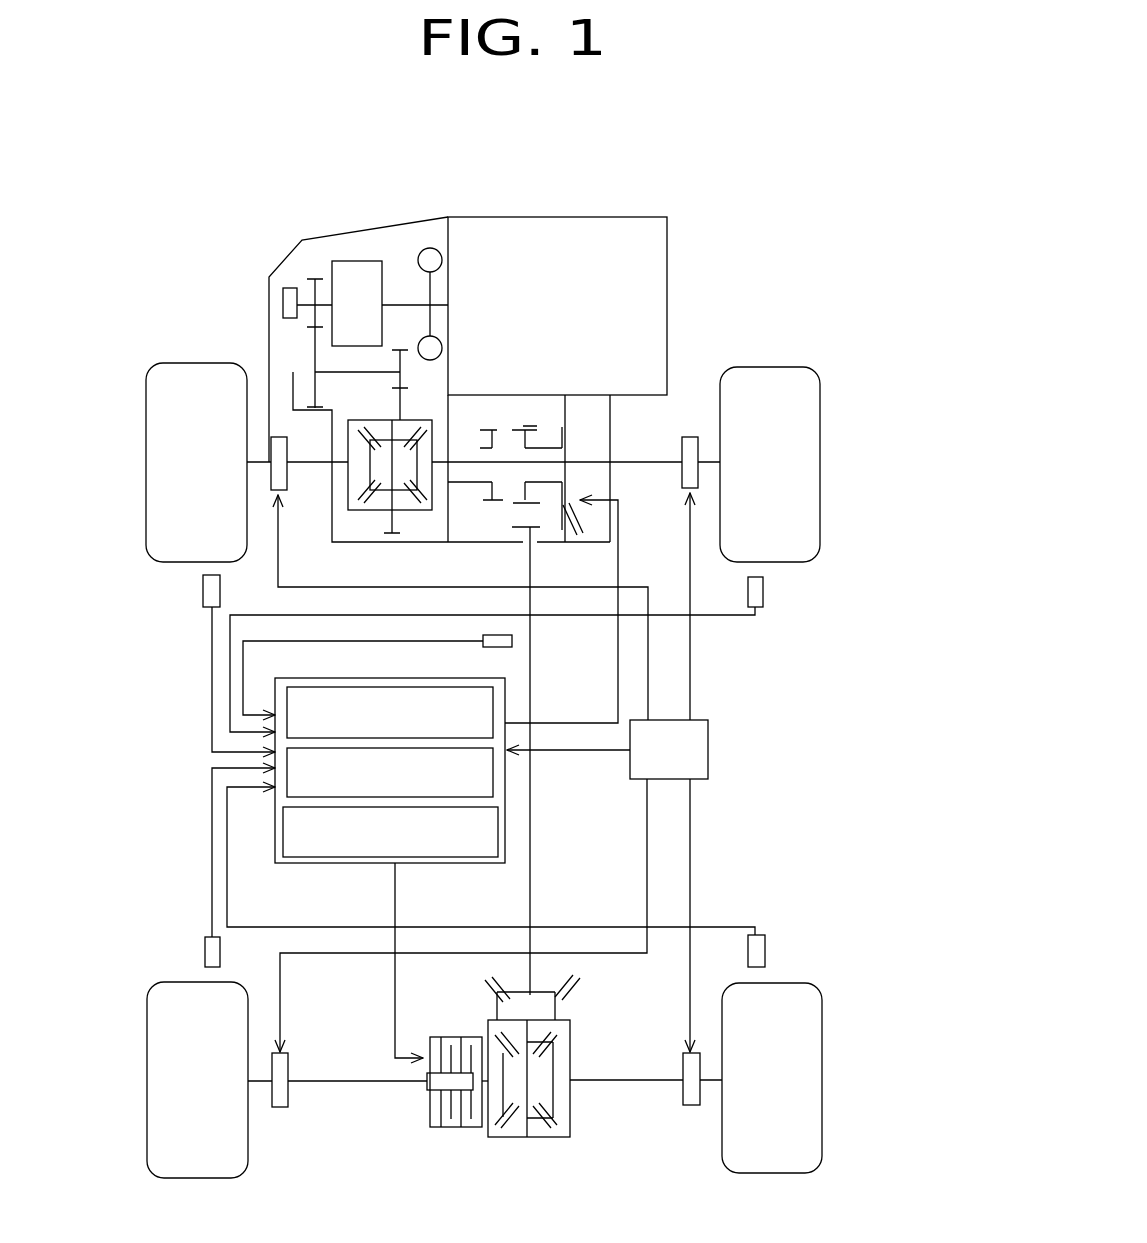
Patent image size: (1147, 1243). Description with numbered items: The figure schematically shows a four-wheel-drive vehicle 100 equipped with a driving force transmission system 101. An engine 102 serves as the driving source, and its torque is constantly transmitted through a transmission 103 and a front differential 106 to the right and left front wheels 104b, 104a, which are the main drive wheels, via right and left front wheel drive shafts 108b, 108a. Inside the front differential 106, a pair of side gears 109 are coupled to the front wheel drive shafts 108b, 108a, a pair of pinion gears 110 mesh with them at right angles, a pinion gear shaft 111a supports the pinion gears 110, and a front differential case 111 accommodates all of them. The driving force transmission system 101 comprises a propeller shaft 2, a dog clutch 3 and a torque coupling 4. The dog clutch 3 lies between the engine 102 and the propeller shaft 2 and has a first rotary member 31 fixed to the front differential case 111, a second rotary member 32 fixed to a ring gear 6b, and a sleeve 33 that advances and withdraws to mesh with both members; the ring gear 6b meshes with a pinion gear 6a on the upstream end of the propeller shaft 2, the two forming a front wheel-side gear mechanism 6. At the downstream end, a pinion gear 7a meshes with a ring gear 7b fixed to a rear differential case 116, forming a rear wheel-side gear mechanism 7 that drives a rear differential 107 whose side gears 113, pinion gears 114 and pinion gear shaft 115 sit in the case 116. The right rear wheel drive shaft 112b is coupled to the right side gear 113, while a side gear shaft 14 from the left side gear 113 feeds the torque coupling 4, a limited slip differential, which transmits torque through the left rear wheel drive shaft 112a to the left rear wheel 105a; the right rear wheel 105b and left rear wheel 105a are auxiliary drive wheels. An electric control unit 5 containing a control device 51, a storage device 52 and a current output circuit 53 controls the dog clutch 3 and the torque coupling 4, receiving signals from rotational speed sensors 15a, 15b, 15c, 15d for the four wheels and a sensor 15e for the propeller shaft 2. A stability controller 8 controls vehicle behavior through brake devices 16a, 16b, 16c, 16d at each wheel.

The four-wheel-drive vehicle 100 is at (732, 155).
The driving force transmission system 101 is at (703, 283).
The engine 102 is at (512, 215).
The transmission 103 is at (340, 235).
The left front wheel 104a is at (145, 457).
The right front wheel 104b is at (822, 450).
The left rear wheel 105a is at (147, 1088).
The right rear wheel 105b is at (823, 1085).
The front differential 106 is at (355, 522).
The rear differential 107 is at (580, 1113).
The left front wheel drive shaft 108a is at (318, 462).
The right front wheel drive shaft 108b is at (642, 462).
The side gears 109 is at (372, 452).
The pinion gears 110 is at (383, 420).
The front differential case 111 is at (393, 438).
The pinion gear shaft 111a is at (368, 465).
The left rear wheel drive shaft 112a is at (350, 1082).
The right rear wheel drive shaft 112b is at (627, 1083).
The side gears 113 is at (513, 1140).
The pinion gears 114 is at (537, 1042).
The pinion gear shaft 115 is at (532, 1078).
The rear differential case 116 is at (557, 1138).
The side gear shaft 14 is at (482, 1088).
The rotational speed sensor 15a is at (203, 602).
The rotational speed sensor 15b is at (765, 592).
The rotational speed sensor 15c is at (205, 948).
The rotational speed sensor 15d is at (767, 948).
The rotational speed sensor 15e is at (505, 647).
The brake device 16a is at (270, 447).
The brake device 16b is at (698, 447).
The brake device 16c is at (270, 1060).
The brake device 16d is at (700, 1062).
The propeller shaft 2 is at (533, 840).
The dog clutch 3 is at (542, 408).
The first rotary member 31 is at (493, 447).
The second rotary member 32 is at (523, 492).
The sleeve 33 is at (537, 432).
The torque coupling 4 is at (415, 1143).
The electric control unit (ECU) 5 is at (320, 678).
The control device 51 is at (287, 715).
The storage device 52 is at (287, 768).
The current output circuit 53 is at (283, 833).
The front wheel-side gear mechanism 6 is at (782, 625).
The pinion gear 6a is at (547, 527).
The ring gear 6b is at (565, 427).
The rear wheel-side gear mechanism 7 is at (770, 848).
The pinion gear 7a is at (572, 985).
The ring gear 7b is at (495, 990).
The stability controller (ESC) 8 is at (710, 737).